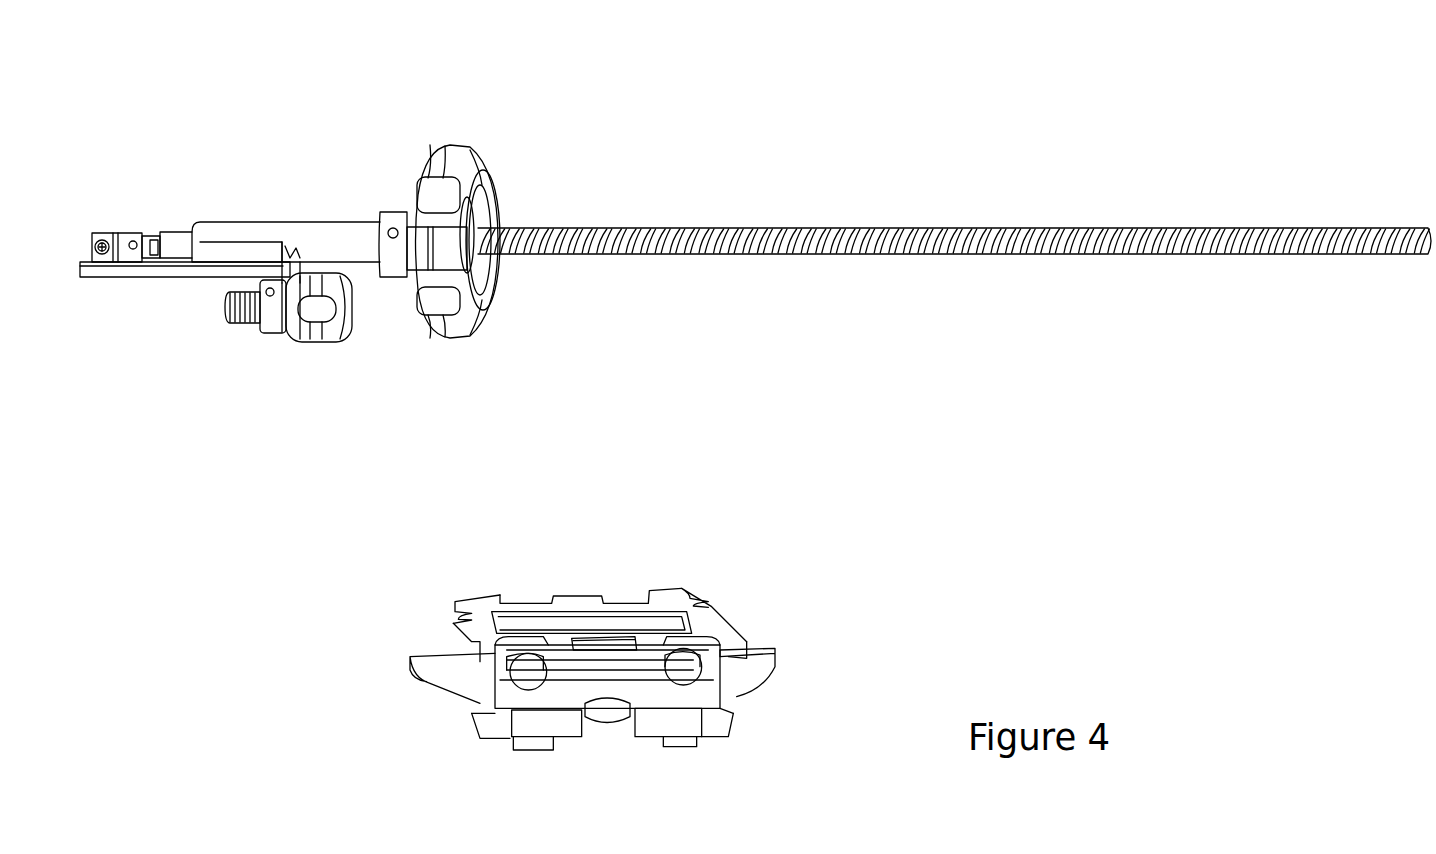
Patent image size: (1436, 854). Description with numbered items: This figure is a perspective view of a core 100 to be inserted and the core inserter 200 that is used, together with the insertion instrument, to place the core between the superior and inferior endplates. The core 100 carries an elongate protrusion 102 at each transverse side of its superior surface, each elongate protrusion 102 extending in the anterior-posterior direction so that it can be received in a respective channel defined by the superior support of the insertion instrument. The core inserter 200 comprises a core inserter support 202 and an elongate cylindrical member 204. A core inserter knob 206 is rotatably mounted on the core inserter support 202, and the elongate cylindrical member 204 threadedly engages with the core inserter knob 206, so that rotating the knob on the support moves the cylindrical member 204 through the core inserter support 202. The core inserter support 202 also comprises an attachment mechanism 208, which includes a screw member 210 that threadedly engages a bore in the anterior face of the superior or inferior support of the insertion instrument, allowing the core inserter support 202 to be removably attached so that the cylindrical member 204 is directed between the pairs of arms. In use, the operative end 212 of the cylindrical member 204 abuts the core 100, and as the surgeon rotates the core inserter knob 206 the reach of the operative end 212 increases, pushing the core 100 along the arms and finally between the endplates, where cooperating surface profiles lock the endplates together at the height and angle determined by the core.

The core 100 is at (625, 583).
The elongate protrusion 102 is at (470, 640).
The core inserter 200 is at (753, 190).
The core inserter support 202 is at (327, 237).
The elongate cylindrical member 204 is at (913, 230).
The core inserter knob 206 is at (490, 146).
The attachment mechanism 208 is at (297, 334).
The screw member 210 is at (233, 327).
The operative end 212 is at (86, 234).